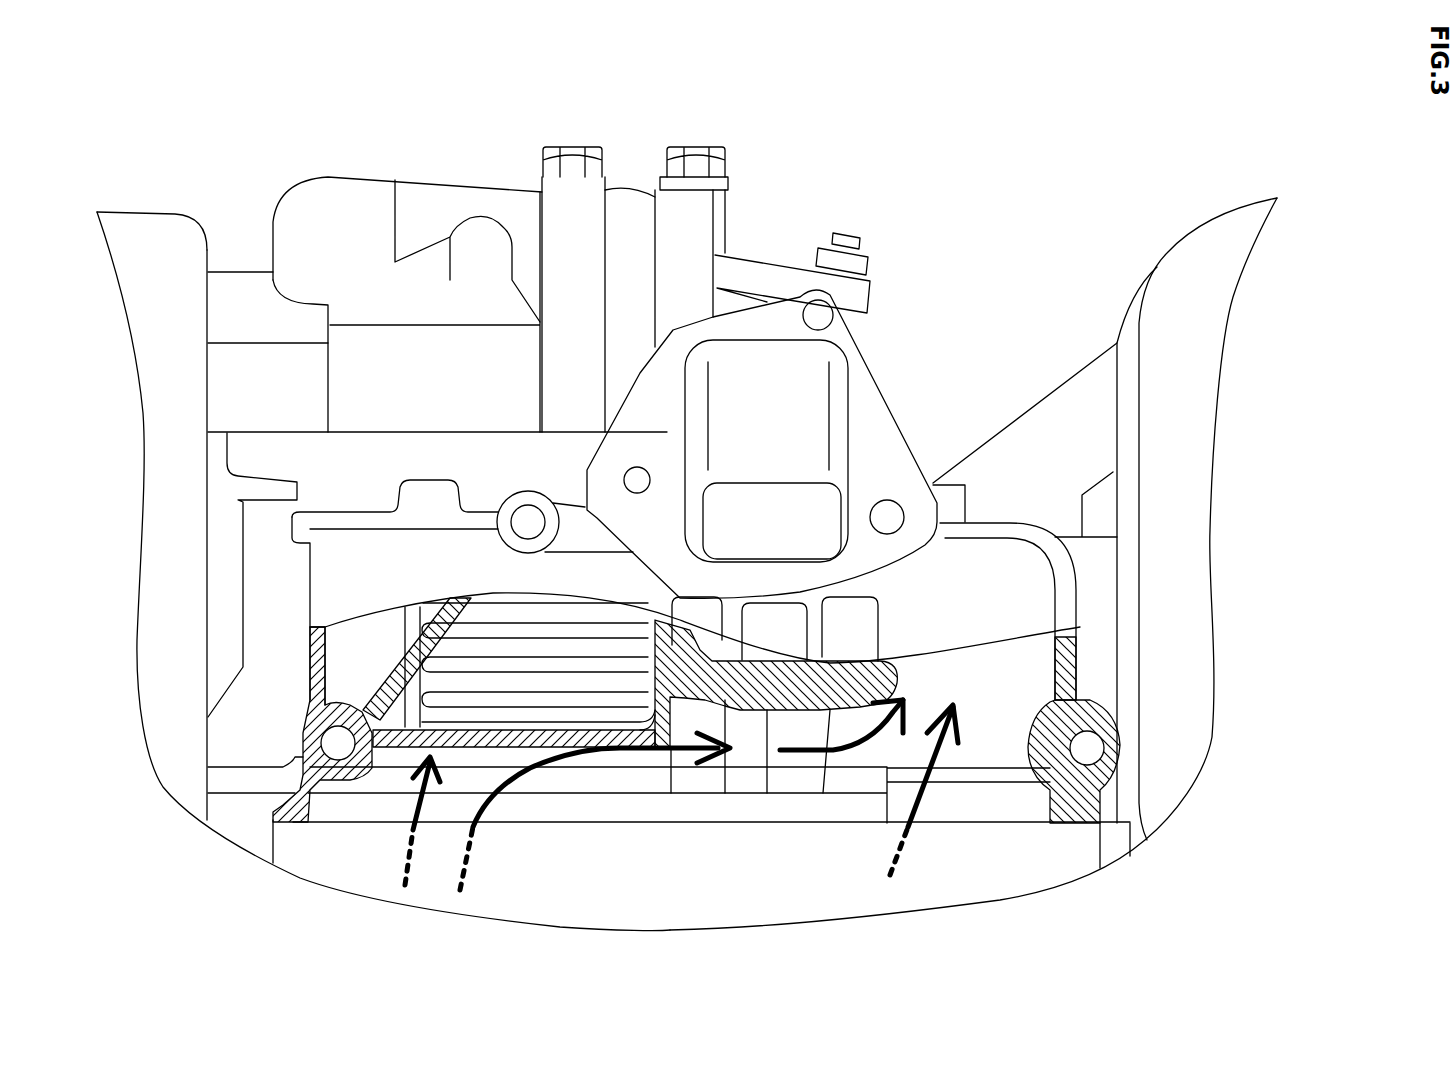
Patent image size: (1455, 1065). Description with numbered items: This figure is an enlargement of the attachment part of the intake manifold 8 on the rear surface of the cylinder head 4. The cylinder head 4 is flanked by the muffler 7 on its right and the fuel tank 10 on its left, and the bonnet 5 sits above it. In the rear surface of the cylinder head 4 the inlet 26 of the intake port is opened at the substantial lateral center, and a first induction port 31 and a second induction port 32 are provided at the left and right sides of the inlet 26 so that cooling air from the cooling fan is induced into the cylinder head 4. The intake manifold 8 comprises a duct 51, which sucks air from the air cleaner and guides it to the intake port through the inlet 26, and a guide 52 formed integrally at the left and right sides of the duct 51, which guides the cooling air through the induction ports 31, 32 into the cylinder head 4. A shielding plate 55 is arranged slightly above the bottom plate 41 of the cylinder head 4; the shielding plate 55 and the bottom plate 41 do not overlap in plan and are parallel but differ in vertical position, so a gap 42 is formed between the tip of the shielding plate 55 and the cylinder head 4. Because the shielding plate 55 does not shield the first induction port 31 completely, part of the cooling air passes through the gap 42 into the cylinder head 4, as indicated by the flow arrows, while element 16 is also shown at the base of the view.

The cylinder head 4 is at (275, 430).
The bonnet 5 is at (373, 177).
The muffler 7 is at (1190, 233).
The intake manifold 8 is at (887, 370).
The fuel tank 10 is at (170, 215).
The base plate 16 is at (684, 903).
The inlet 26 is at (730, 655).
The first induction port 31 is at (390, 642).
The second induction port 32 is at (988, 740).
The bottom plate 41 is at (595, 793).
The gap 42 is at (377, 753).
The duct 51 is at (1007, 523).
The guide 52 is at (827, 710).
The shielding plate 55 is at (502, 748).